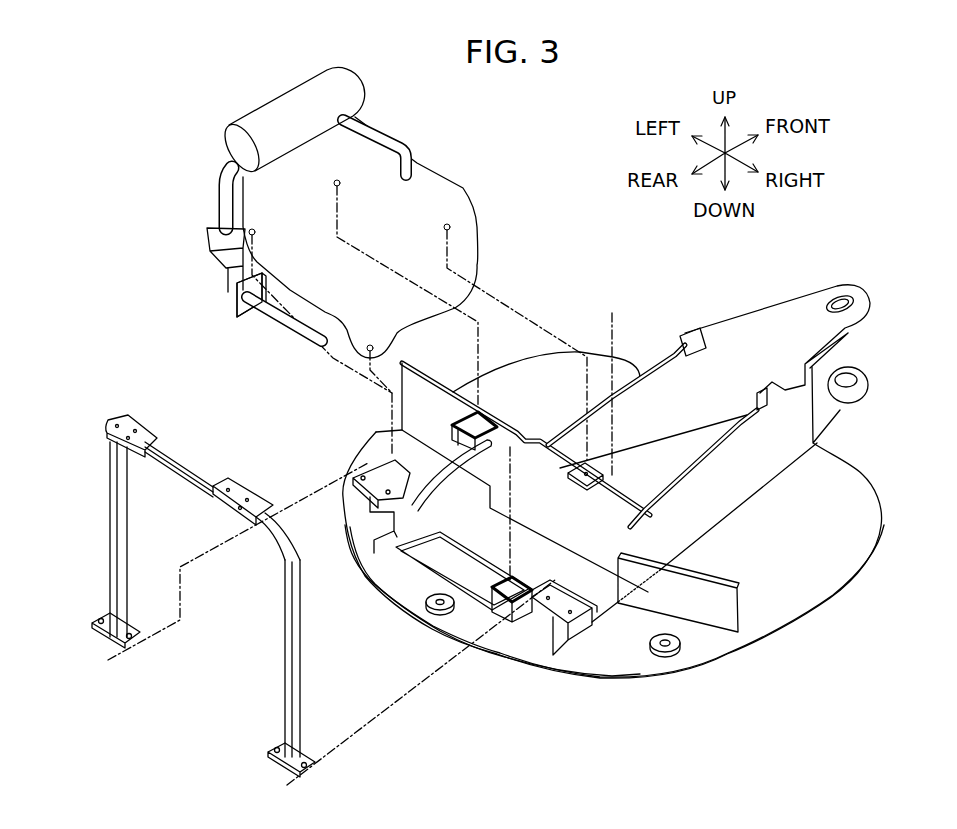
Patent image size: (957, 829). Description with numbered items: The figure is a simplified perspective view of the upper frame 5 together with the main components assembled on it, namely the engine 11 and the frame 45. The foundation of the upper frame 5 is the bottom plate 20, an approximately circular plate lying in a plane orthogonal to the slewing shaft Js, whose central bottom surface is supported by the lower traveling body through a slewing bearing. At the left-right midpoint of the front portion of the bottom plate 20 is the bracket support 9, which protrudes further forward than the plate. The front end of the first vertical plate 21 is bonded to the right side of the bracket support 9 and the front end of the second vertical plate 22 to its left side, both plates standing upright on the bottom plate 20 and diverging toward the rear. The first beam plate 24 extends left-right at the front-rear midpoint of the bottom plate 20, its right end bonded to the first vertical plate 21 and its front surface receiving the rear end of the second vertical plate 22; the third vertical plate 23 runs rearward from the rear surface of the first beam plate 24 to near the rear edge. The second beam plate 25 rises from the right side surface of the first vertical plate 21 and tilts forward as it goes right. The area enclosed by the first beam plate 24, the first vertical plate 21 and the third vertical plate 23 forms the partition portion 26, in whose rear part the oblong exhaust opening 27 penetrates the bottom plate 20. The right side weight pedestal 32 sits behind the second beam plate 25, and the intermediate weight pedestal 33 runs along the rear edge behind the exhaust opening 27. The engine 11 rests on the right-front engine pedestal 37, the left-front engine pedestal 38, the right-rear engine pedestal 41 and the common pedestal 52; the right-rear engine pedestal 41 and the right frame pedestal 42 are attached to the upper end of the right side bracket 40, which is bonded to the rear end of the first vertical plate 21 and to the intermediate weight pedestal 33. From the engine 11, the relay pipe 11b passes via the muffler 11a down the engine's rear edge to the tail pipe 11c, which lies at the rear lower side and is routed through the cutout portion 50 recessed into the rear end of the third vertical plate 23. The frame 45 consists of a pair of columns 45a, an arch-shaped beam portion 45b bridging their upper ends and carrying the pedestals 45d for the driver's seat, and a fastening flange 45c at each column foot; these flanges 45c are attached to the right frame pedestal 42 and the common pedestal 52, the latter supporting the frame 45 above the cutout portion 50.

The upper frame 5 is at (888, 475).
The bracket support 9 is at (775, 320).
The engine 11 is at (398, 112).
The muffler 11a is at (272, 107).
The relay pipe 11b is at (213, 170).
The tail pipe 11c is at (278, 328).
The bottom plate 20 is at (880, 532).
The first vertical plate 21 is at (752, 478).
The second vertical plate 22 is at (645, 360).
The third vertical plate 23 is at (463, 487).
The first beam plate 24 is at (620, 490).
The second beam plate 25 is at (705, 575).
The partition portion 26 is at (535, 480).
The exhaust opening 27 is at (475, 558).
The right side weight pedestal 32 is at (672, 655).
The intermediate weight pedestal 33 is at (518, 655).
The right-front engine pedestal 37 is at (583, 487).
The left-front engine pedestal 38 is at (483, 403).
The right side bracket 40 is at (558, 647).
The right-rear engine pedestal 41 is at (516, 573).
The right frame pedestal 42 is at (598, 612).
The frame 45 is at (194, 576).
The columns 45a is at (110, 505).
The beam portion 45b is at (183, 466).
The fastening flange 45c is at (97, 630).
The pedestals 45d is at (128, 418).
The cutout portion 50 is at (360, 530).
The common pedestal 52 is at (383, 453).
The slewing shaft Js is at (612, 313).